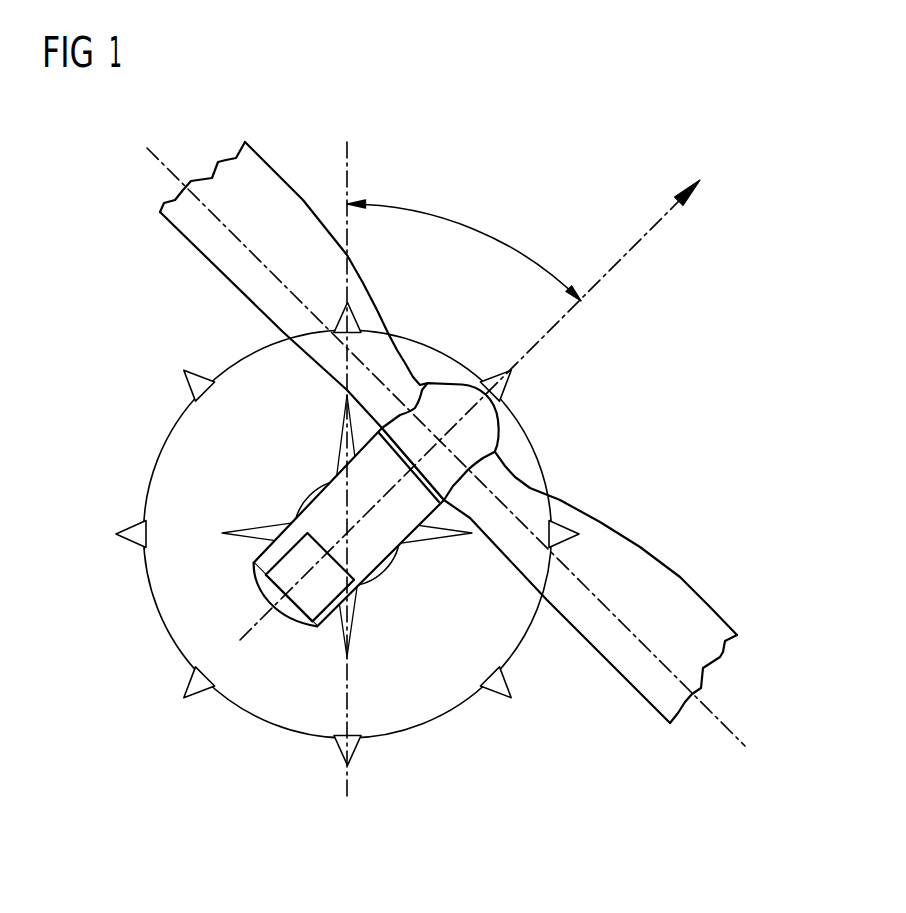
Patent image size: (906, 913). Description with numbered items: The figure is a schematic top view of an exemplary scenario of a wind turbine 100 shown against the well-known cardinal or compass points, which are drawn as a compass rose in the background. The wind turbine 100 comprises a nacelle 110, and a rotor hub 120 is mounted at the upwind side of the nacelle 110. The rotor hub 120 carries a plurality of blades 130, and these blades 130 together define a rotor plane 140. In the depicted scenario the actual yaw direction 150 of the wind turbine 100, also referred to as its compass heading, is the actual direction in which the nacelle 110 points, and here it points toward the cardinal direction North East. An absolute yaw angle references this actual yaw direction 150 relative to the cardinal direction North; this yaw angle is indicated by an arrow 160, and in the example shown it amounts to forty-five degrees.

The wind turbine 100 is at (115, 445).
The nacelle 110 is at (292, 633).
The rotor hub 120 is at (512, 410).
The blades 130 is at (213, 250).
The rotor plane 140 is at (723, 717).
The yaw direction 150 is at (660, 223).
The arrow 160 is at (450, 220).